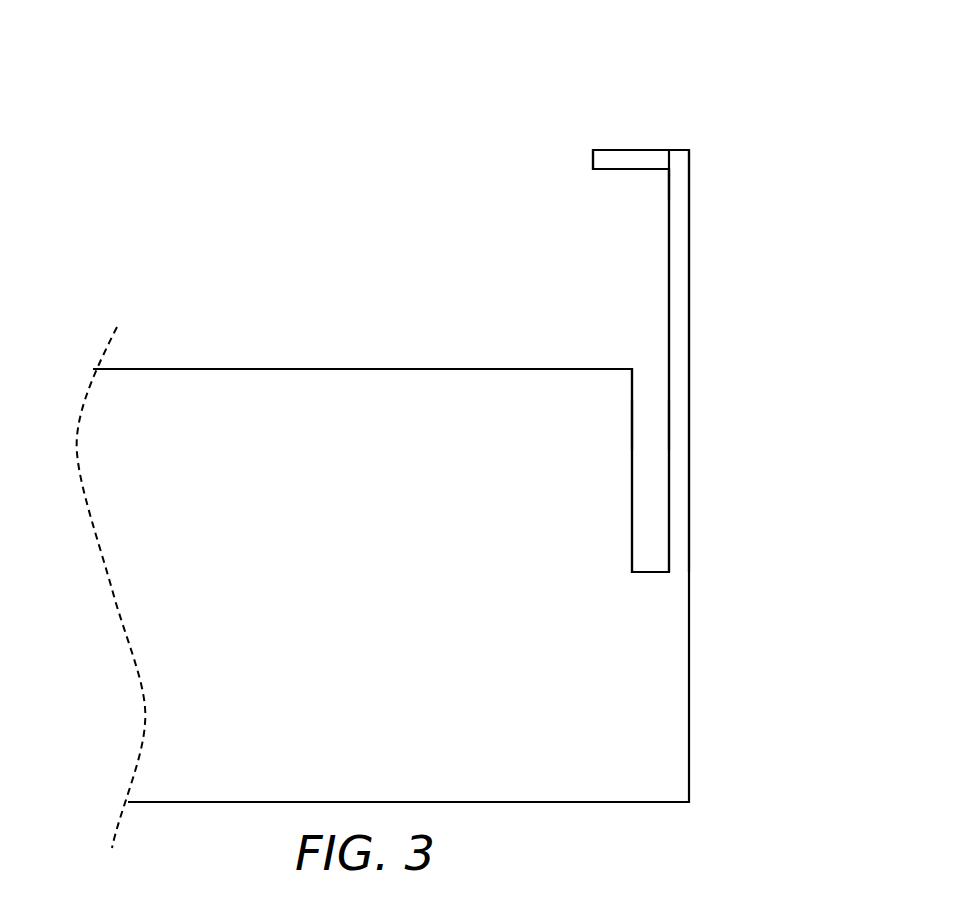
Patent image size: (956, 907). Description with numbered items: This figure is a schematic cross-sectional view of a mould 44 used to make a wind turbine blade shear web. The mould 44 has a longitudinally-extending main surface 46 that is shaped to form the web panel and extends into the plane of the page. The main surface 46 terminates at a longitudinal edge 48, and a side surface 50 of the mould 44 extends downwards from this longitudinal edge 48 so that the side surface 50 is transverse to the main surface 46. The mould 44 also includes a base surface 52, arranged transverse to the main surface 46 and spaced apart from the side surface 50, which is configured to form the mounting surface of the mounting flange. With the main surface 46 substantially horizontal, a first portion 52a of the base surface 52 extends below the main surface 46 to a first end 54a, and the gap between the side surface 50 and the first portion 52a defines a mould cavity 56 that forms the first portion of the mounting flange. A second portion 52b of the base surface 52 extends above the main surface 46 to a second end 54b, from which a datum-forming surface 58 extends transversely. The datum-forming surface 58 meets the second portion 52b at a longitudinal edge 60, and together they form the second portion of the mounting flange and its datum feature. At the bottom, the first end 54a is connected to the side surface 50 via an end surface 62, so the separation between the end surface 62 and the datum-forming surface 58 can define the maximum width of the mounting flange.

The mould 44 is at (185, 248).
The main surface 46 is at (253, 371).
The longitudinal edge 48 is at (632, 370).
The side surface 50 is at (632, 478).
The base surface 52 is at (655, 333).
The first portion of the base surface 52a is at (670, 482).
The second portion of the base surface 52b is at (668, 234).
The first end of the base surface 54a is at (660, 558).
The second end of the base surface 54b is at (658, 192).
The mould cavity 56 is at (654, 430).
The datum-forming surface 58 is at (618, 172).
The longitudinal edge 60 is at (668, 160).
The end surface 62 is at (648, 573).